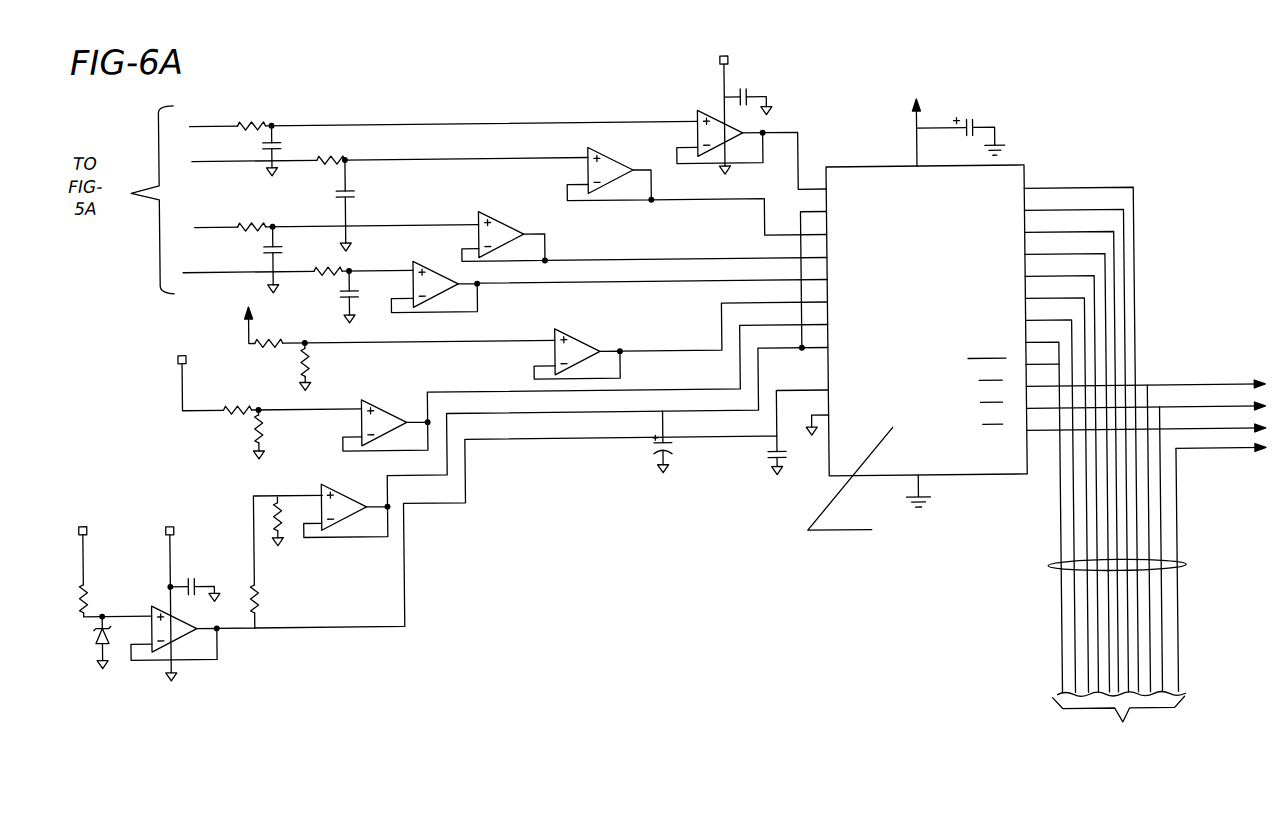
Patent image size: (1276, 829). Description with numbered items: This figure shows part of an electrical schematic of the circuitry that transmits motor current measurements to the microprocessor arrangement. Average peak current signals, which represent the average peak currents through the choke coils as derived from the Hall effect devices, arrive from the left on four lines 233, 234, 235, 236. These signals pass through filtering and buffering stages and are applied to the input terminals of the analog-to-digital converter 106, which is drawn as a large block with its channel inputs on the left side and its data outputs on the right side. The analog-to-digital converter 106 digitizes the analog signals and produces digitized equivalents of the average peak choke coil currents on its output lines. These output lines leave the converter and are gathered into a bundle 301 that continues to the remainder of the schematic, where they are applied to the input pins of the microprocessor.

The line 233 is at (215, 119).
The line 234 is at (221, 156).
The line 235 is at (226, 222).
The line 236 is at (221, 267).
The analog-to-digital converter 106 is at (1003, 170).
The data cable to FIG. 6B 301 is at (1182, 568).